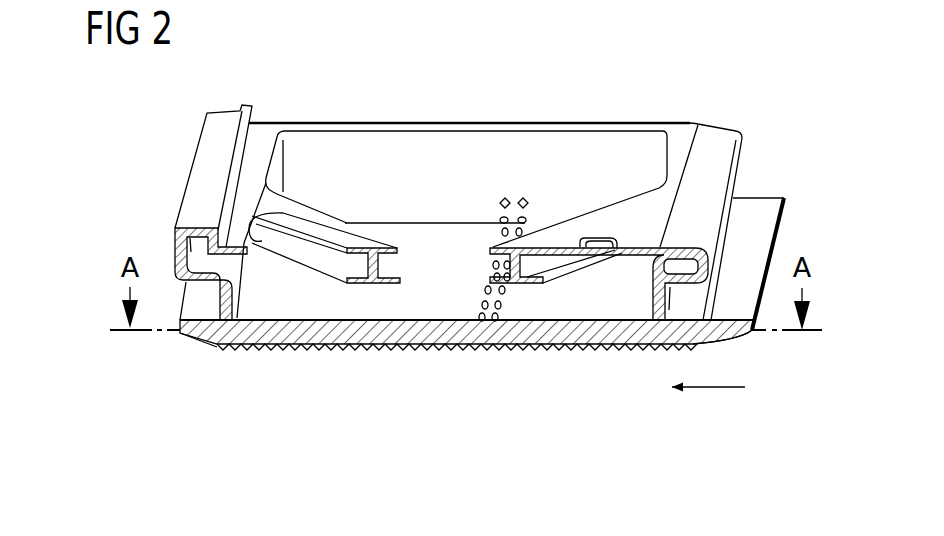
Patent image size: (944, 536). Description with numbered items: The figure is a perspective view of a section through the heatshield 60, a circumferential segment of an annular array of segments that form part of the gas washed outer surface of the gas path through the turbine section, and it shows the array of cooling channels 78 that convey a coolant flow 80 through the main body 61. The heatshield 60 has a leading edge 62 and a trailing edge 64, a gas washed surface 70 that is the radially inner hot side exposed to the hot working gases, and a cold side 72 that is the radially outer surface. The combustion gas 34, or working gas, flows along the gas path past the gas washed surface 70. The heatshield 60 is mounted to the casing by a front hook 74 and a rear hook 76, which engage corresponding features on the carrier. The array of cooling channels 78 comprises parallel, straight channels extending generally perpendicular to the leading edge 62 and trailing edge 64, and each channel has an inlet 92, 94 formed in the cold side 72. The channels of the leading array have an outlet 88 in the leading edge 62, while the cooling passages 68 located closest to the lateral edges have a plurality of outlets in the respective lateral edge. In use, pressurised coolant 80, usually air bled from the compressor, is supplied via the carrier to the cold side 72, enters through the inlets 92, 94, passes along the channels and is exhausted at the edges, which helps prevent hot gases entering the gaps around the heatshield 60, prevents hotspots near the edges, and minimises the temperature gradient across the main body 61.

The heatshield 60 is at (141, 162).
The rear hook 76 is at (203, 181).
The coolant flow 80 is at (571, 162).
The front hook 74 is at (715, 147).
The cooling passages 68 is at (737, 197).
The leading edge 62 is at (785, 222).
The trailing edge 64 is at (173, 276).
The main body 61 is at (181, 305).
The cold side 72 is at (438, 247).
The inlet 94 is at (507, 196).
The inlet 92 is at (481, 290).
The gas washed surface 70 is at (247, 360).
The array of cooling channels 78 is at (579, 345).
The outlet 88 is at (178, 333).
The combustion gas 34 is at (728, 389).